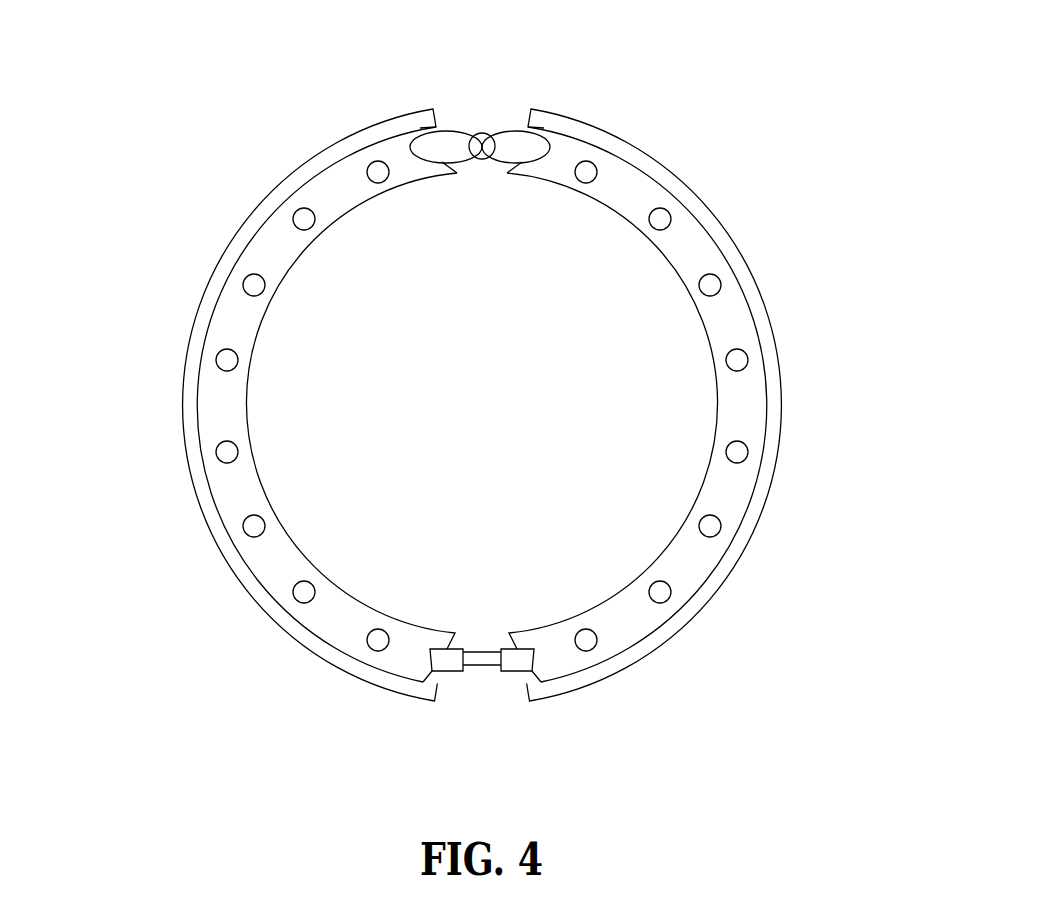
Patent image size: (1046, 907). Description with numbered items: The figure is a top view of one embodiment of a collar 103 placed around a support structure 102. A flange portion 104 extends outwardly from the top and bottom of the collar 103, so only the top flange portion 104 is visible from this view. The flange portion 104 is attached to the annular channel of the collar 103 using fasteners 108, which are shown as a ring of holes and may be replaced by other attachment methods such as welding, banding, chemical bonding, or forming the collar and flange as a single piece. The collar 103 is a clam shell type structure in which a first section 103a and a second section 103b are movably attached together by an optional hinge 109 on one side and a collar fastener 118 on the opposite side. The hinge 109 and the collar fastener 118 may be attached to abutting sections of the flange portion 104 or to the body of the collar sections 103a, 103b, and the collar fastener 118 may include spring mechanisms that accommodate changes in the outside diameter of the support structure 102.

The support structure 102 is at (469, 377).
The collar 103 is at (502, 358).
The first section 103a is at (608, 125).
The second section 103b is at (400, 113).
The flange portion 104 is at (382, 132).
The fasteners 108 is at (239, 293).
The hinge 109 is at (483, 120).
The collar fastener 118 is at (497, 680).